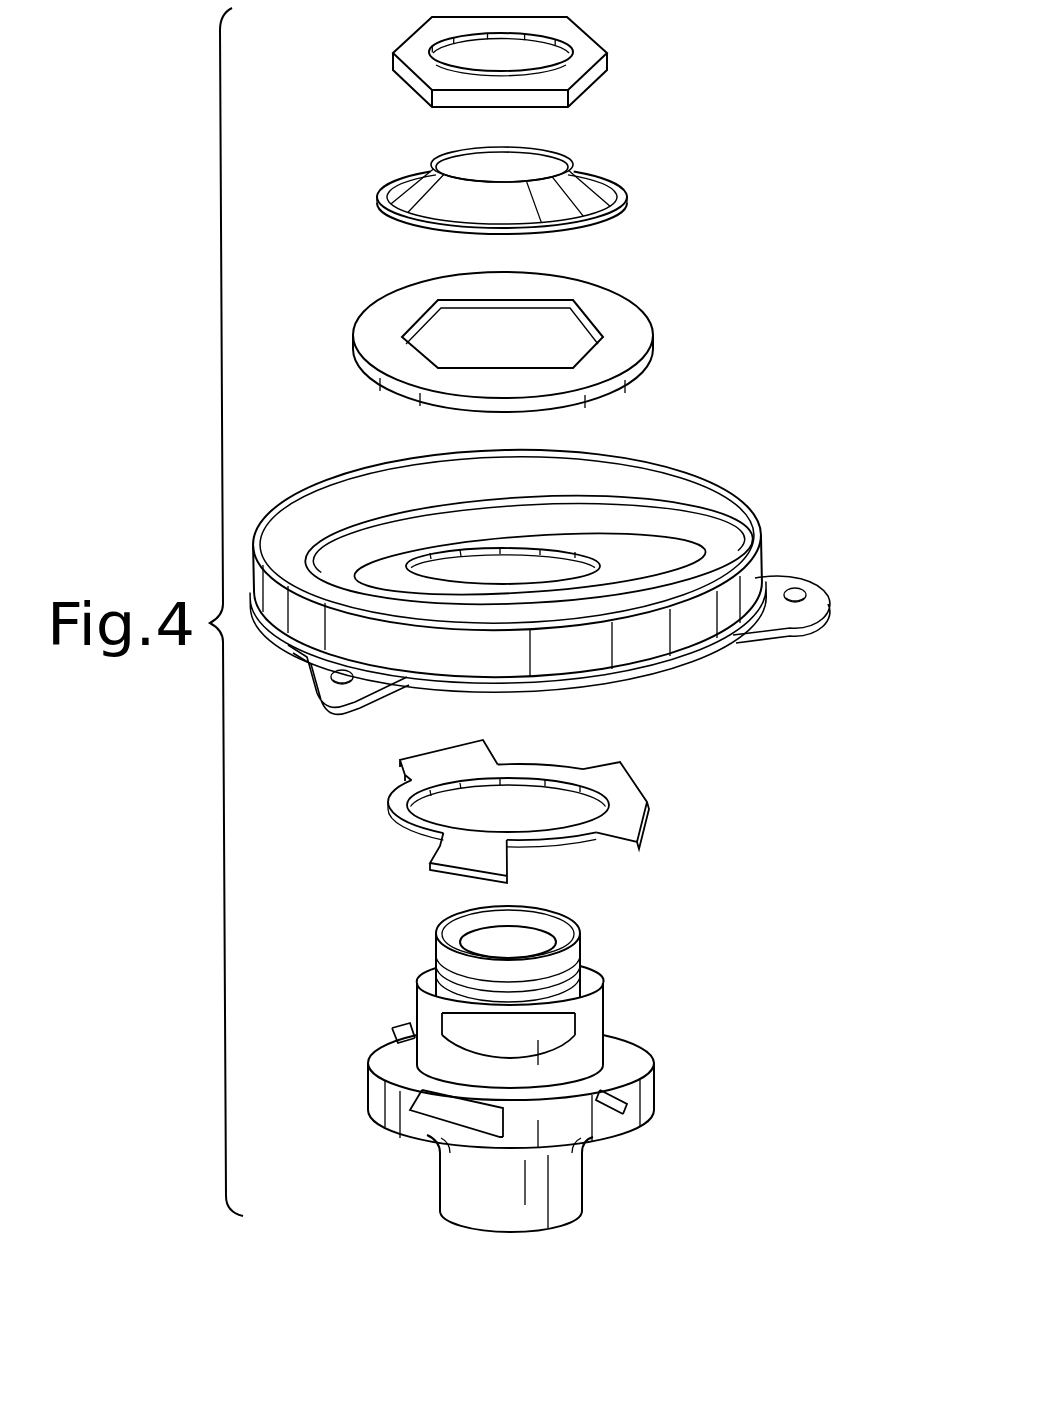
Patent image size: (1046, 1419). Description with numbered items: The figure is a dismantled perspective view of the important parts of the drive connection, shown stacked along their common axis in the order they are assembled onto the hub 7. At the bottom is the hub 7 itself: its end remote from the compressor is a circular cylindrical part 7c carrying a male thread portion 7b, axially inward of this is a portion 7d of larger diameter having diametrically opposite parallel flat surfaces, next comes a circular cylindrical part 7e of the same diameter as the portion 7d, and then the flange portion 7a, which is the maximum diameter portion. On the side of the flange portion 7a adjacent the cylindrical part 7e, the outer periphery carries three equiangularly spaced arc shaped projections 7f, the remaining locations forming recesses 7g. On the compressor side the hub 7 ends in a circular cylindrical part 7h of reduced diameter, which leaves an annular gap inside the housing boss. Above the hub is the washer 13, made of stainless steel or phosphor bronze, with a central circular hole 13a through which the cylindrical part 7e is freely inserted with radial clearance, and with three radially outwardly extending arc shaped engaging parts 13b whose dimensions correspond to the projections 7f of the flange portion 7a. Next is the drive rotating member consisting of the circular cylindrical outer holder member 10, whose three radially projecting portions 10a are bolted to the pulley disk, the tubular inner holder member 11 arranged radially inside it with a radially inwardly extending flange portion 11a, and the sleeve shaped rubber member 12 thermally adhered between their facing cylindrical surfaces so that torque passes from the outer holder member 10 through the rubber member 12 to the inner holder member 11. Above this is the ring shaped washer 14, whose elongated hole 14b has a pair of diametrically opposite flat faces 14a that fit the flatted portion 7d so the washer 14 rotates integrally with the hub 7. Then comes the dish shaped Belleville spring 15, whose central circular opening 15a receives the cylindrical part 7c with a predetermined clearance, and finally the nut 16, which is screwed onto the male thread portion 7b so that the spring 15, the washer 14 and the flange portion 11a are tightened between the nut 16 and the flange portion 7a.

The hub 7 is at (358, 1070).
The flange portion 7a is at (573, 1117).
The male thread portion 7b is at (585, 950).
The circular cylindrical part 7c is at (600, 975).
The portion with parallel flat surfaces 7d is at (458, 1020).
The circular cylindrical part 7e is at (565, 1060).
The arc shaped projections 7f is at (393, 1023).
The recesses 7g is at (590, 1135).
The circular cylindrical part of reduced diameter 7h is at (565, 1200).
The outer holder member 10 is at (692, 625).
The projected portions 10a is at (818, 598).
The inner holder member 11 is at (647, 530).
The flange portion 11a is at (565, 545).
The rubber member 12 is at (728, 528).
The washer 13 is at (556, 768).
The circular hole 13a is at (545, 812).
The arc shaped engaging parts 13b is at (438, 756).
The washer 14 is at (630, 342).
The flat faces 14a is at (527, 297).
The elongated hole 14b is at (548, 332).
The Belleville spring 15 is at (600, 190).
The central circular opening 15a is at (525, 160).
The nut 16 is at (570, 33).